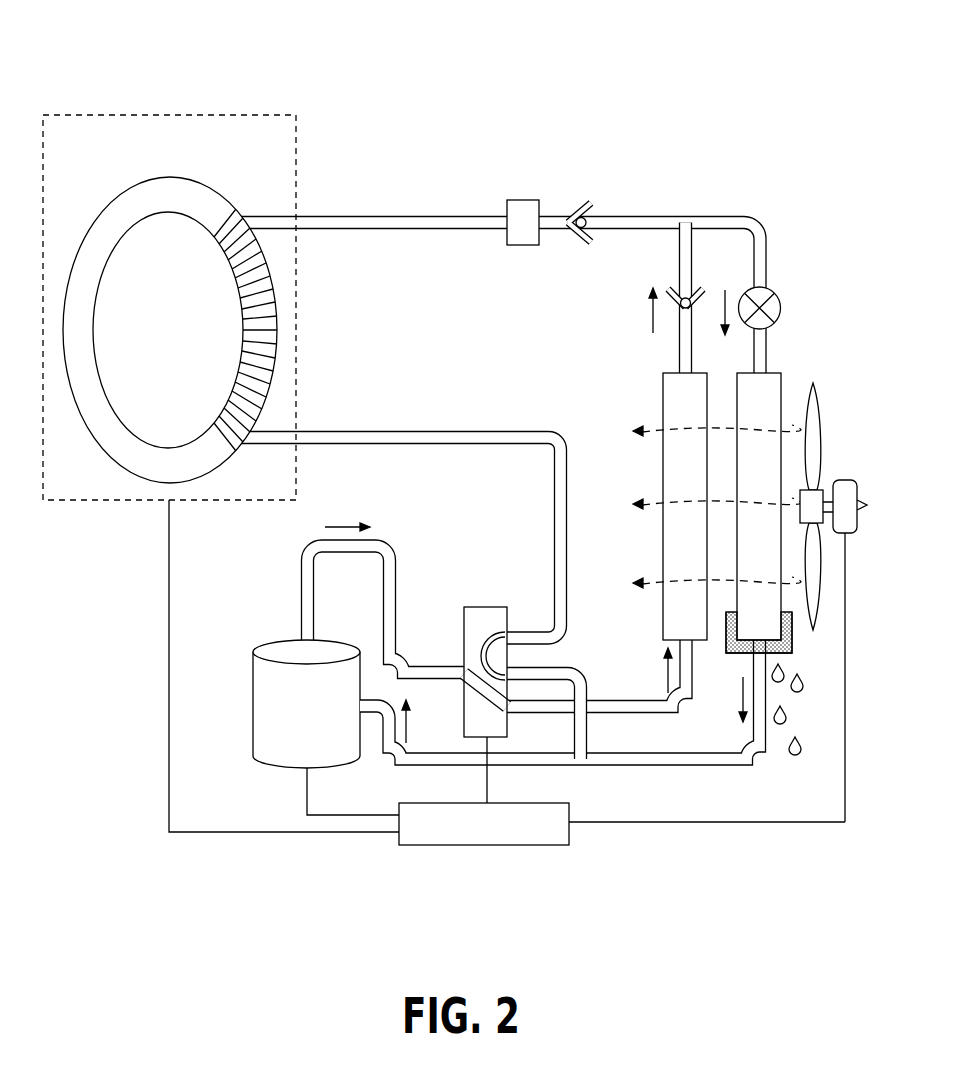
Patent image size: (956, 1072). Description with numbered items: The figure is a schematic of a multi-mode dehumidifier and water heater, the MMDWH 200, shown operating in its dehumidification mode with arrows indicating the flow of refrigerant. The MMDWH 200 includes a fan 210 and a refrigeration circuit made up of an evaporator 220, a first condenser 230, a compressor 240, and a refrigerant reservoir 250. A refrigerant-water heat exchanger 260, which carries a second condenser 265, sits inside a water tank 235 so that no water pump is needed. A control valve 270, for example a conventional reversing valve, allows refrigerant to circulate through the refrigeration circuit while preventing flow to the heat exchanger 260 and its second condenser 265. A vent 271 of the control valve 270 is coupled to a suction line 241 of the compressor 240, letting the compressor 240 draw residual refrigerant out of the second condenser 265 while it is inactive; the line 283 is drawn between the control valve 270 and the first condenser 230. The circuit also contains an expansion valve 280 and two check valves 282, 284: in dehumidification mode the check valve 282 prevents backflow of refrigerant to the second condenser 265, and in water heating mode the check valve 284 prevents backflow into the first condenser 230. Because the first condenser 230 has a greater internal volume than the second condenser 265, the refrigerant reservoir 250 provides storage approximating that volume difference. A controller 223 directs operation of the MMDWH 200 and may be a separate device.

The MMDWH 200 is at (703, 78).
The fan 210 is at (848, 480).
The evaporator 220 is at (782, 380).
The controller 223 is at (440, 845).
The first condenser 230 is at (663, 390).
The water tank 235 is at (298, 132).
The compressor 240 is at (287, 725).
The suction line 241 is at (545, 765).
The refrigerant reservoir 250 is at (522, 200).
The refrigerant-water heat exchanger 260 is at (122, 192).
The second condenser 265 is at (222, 214).
The control valve 270 is at (470, 607).
The vent 271 is at (577, 672).
The expansion valve 280 is at (782, 308).
The check valve 282 is at (580, 203).
The conduit 283 is at (672, 765).
The check valve 284 is at (705, 297).